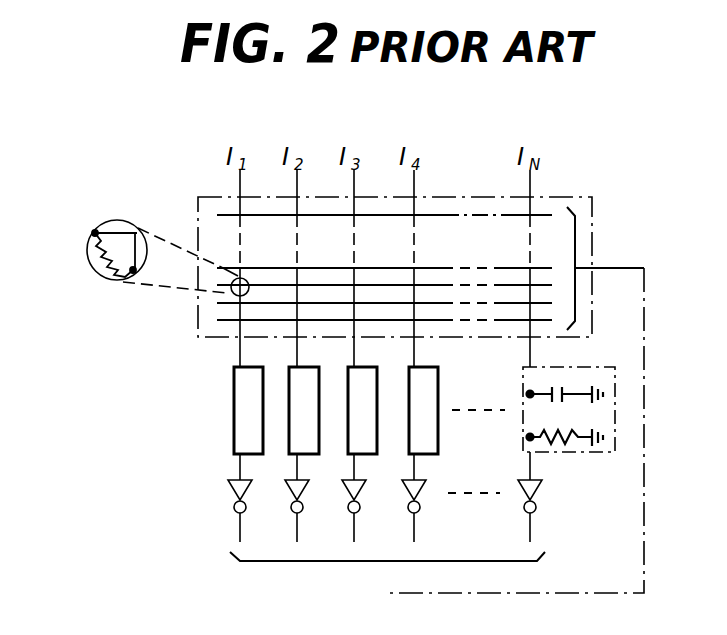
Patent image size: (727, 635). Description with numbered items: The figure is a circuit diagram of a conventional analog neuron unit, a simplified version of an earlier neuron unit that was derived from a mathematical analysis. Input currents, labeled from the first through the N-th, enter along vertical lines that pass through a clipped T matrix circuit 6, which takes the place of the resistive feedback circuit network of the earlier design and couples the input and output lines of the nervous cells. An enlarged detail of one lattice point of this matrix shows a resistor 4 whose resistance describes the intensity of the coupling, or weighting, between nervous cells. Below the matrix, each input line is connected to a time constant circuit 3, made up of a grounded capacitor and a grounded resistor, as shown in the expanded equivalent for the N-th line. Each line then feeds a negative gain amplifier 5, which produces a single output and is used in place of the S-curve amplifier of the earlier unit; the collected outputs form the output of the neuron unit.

The time constant circuit 3 is at (288, 428).
The resistor 4 is at (107, 253).
The negative gain amplifier 5 is at (237, 497).
The clipped T matrix circuit 6 is at (210, 197).